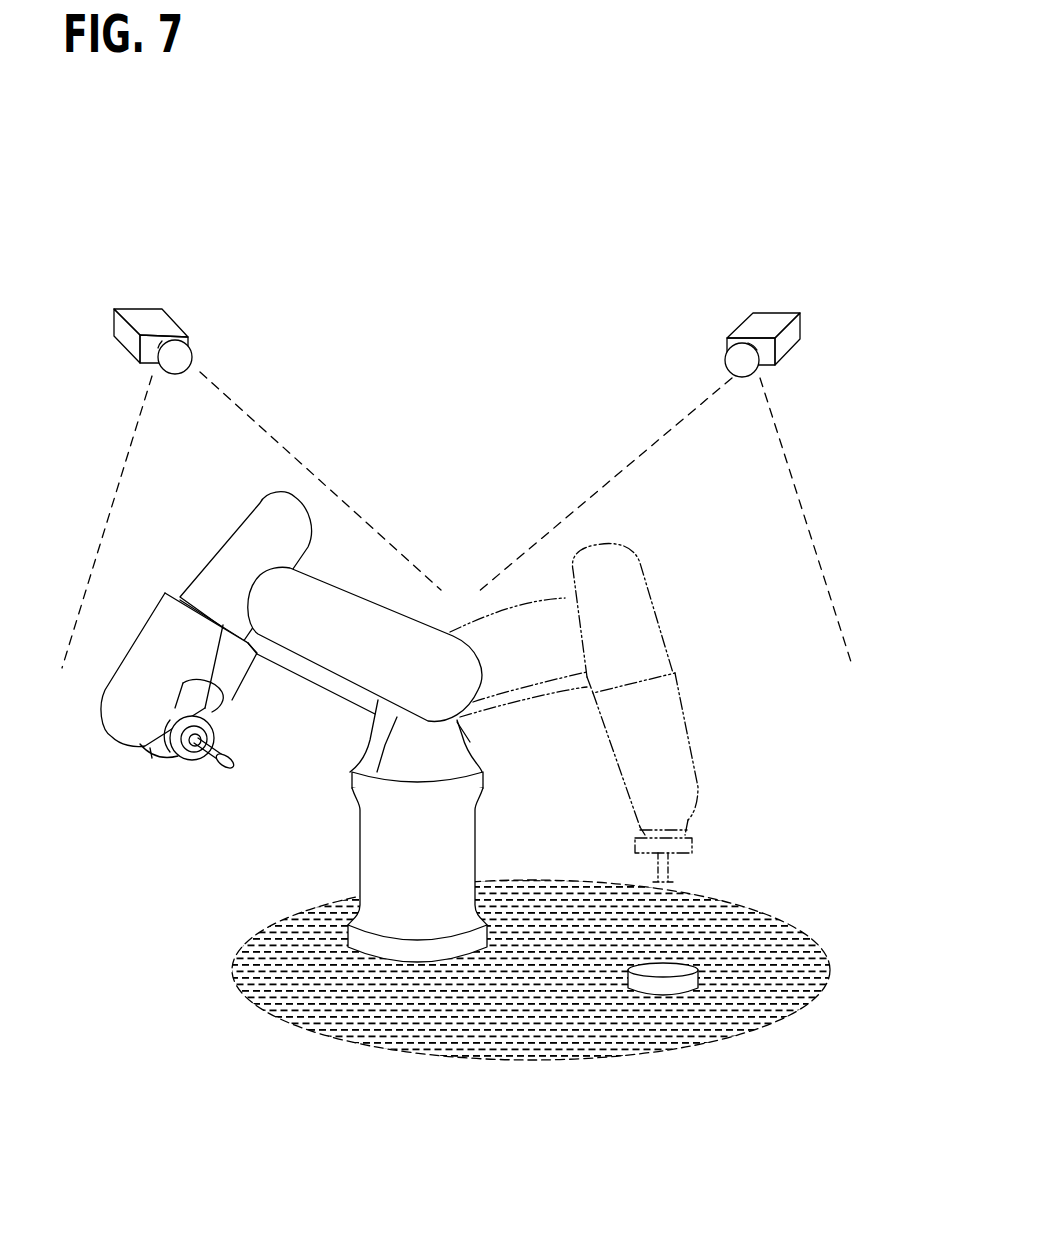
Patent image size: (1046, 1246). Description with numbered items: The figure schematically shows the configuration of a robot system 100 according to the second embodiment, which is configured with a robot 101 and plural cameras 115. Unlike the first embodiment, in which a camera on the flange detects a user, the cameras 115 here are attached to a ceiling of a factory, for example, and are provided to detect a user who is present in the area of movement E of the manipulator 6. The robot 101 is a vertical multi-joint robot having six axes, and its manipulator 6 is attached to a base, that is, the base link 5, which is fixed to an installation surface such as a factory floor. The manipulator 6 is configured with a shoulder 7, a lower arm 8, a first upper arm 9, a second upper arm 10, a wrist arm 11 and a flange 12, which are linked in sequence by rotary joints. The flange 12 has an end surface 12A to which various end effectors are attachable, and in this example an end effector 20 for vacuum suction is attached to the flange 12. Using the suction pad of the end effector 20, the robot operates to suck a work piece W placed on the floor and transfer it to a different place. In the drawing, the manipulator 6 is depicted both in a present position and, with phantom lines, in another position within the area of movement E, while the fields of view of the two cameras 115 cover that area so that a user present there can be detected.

The robot system 100 is at (781, 215).
The robot 101 is at (652, 512).
The cameras 115 is at (158, 323).
The manipulator 6 is at (468, 575).
The base link 5 is at (460, 837).
The shoulder 7 is at (445, 758).
The lower arm 8 is at (330, 598).
The first upper arm 9 is at (230, 535).
The second upper arm 10 is at (135, 670).
The wrist arm 11 is at (147, 747).
The flange 12 is at (237, 713).
The end surface 12A is at (210, 734).
The end effector 20 is at (208, 748).
The area of movement E is at (315, 937).
The work piece W is at (685, 970).